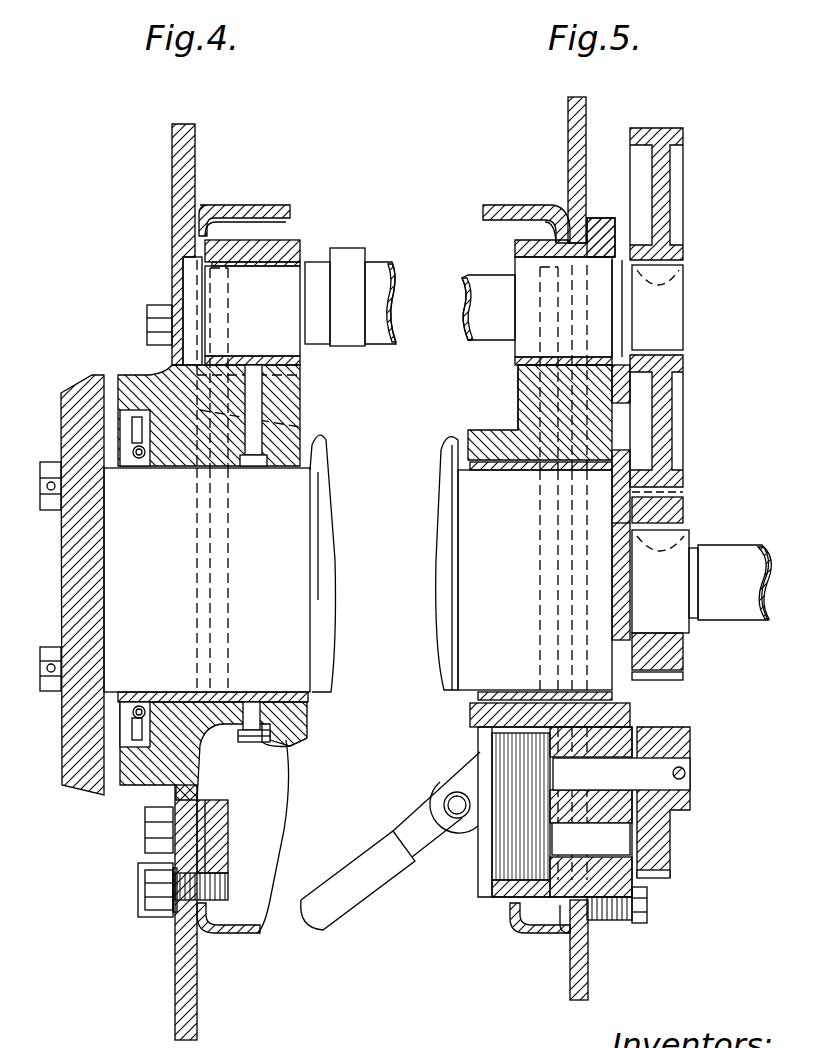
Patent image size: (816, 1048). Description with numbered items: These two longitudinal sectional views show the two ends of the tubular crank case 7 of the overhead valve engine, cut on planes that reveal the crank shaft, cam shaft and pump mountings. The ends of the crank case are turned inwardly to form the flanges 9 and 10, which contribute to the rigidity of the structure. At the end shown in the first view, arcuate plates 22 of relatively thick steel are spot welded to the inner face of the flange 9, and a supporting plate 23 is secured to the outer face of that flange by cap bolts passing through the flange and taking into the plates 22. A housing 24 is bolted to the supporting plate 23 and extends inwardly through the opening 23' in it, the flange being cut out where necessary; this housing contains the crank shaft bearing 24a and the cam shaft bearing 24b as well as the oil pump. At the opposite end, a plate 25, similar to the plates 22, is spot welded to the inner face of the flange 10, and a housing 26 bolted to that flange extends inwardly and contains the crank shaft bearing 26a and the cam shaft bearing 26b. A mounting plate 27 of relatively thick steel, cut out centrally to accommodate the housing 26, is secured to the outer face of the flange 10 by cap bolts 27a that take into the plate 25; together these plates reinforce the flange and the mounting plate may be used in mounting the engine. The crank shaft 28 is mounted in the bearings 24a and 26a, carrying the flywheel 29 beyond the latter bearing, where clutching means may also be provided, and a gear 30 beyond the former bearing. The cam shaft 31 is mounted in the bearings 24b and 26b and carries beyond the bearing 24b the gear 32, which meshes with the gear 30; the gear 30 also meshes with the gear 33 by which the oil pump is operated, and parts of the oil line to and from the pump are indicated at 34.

In FIG. 4, the crank case 7 is at (266, 201).
In FIG. 5, the crank case 7 is at (506, 199).
In FIG. 5, the flange 9 is at (548, 236).
In FIG. 4, the flange 10 is at (208, 229).
In FIG. 5, the plates 22 is at (540, 345).
In FIG. 5, the supporting plate 23 is at (580, 146).
In FIG. 5, the opening 23' is at (612, 568).
In FIG. 5, the housing 24 is at (612, 418).
In FIG. 5, the crank shaft bearing 24a is at (500, 705).
In FIG. 5, the cam shaft bearing 24b is at (518, 372).
In FIG. 4, the plate 25 is at (222, 812).
In FIG. 4, the housing 26 is at (140, 775).
In FIG. 4, the crank shaft bearing 26a is at (290, 738).
In FIG. 4, the cam shaft bearing 26b is at (302, 369).
In FIG. 4, the mounting plate 27 is at (182, 137).
In FIG. 4, the cap bolts 27a is at (150, 918).
In FIG. 4, the crank shaft 28 is at (303, 524).
In FIG. 5, the crank shaft 28 is at (472, 540).
In FIG. 4, the flywheel 29 is at (68, 790).
In FIG. 5, the gear 30 is at (680, 655).
In FIG. 4, the cam shaft 31 is at (377, 280).
In FIG. 5, the cam shaft 31 is at (474, 282).
In FIG. 5, the gear 32 is at (672, 490).
In FIG. 5, the gear 33 is at (660, 858).
In FIG. 5, the oil line 34 is at (371, 850).